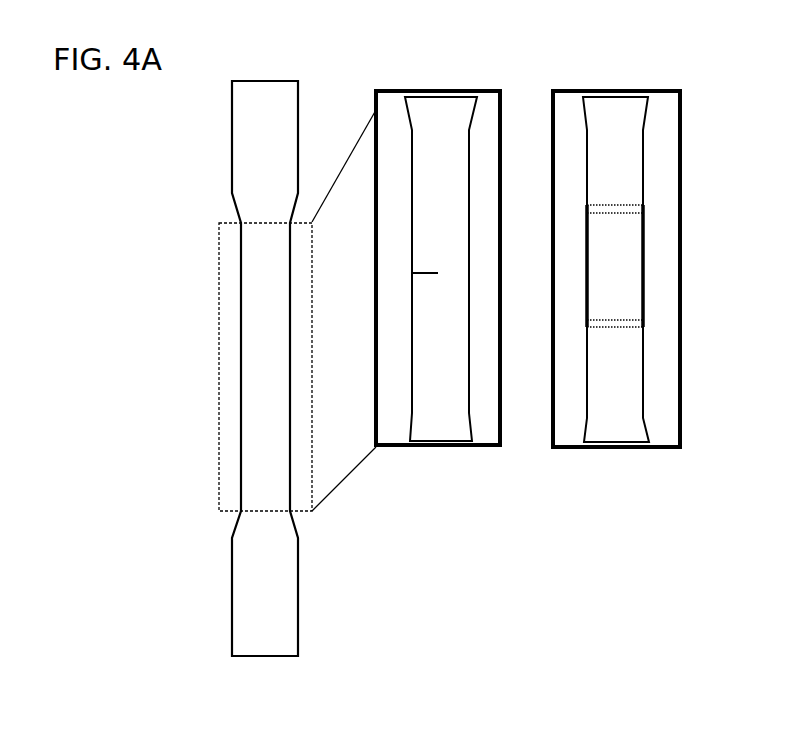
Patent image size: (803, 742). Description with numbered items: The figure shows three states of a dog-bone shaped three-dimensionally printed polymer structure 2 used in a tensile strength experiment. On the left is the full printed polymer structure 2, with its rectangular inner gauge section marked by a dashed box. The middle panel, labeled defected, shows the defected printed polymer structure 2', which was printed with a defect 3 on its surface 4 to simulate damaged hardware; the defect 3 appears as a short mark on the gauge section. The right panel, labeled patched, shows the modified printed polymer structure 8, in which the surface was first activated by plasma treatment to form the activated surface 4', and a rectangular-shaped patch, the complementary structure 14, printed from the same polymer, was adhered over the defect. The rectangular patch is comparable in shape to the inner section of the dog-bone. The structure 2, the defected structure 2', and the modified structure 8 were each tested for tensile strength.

The 3D printed polymer structure 2 is at (263, 368).
The defected 3D printed polymer structure 2' is at (467, 299).
The defect 3 is at (422, 278).
The surface 4 is at (431, 306).
The activated surface 4' is at (616, 311).
The modified 3D-printed polymer structure 8 is at (650, 462).
The complementary structure 14 is at (625, 275).